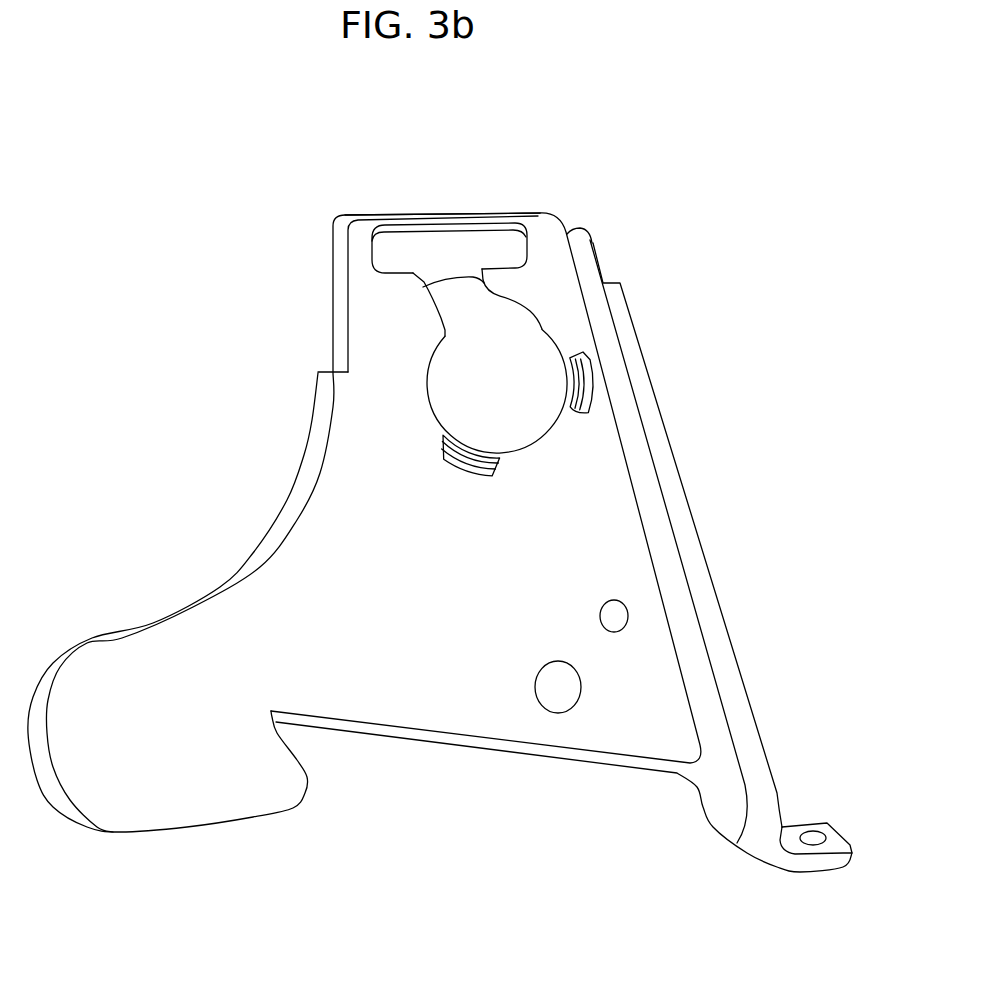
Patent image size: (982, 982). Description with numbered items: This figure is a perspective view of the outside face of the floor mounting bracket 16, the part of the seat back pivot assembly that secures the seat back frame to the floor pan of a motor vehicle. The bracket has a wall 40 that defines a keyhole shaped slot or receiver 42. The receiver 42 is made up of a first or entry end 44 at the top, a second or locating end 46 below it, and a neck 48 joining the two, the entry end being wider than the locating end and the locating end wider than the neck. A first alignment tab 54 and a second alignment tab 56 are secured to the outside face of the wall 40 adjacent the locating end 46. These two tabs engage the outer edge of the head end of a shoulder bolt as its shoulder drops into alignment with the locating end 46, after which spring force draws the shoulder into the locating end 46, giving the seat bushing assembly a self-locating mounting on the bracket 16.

The floor mounting bracket 16 is at (250, 304).
The wall 40 is at (345, 493).
The keyhole shaped slot or receiver 42 is at (461, 200).
The first or entry end 44 is at (490, 237).
The second or locating end 46 is at (550, 347).
The neck 48 is at (473, 292).
The first alignment tab 54 is at (465, 465).
The second alignment tab 56 is at (587, 393).